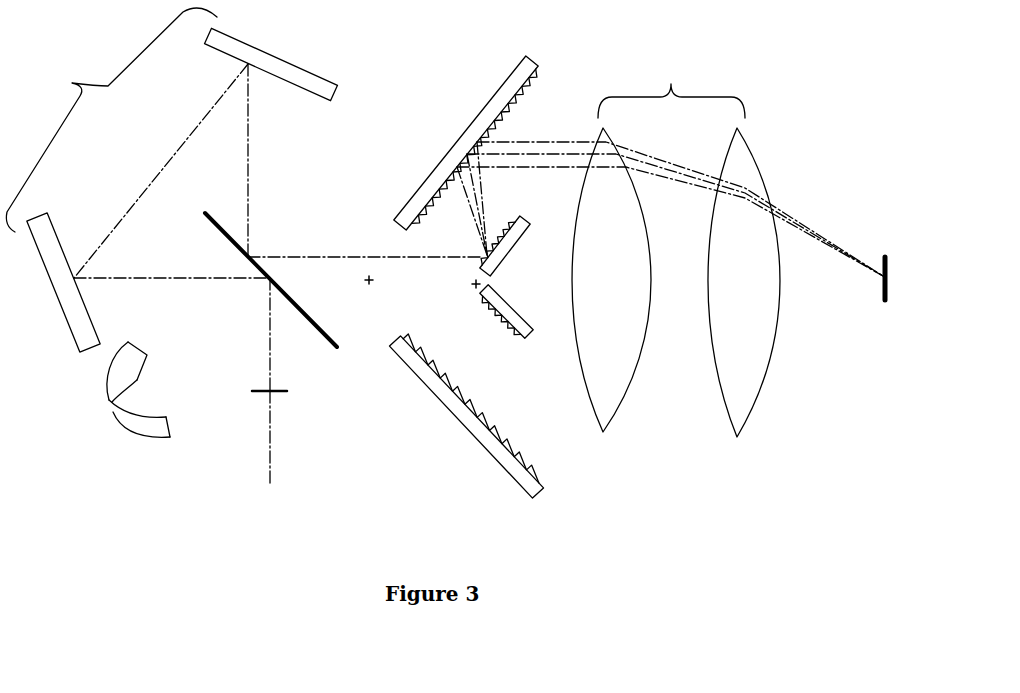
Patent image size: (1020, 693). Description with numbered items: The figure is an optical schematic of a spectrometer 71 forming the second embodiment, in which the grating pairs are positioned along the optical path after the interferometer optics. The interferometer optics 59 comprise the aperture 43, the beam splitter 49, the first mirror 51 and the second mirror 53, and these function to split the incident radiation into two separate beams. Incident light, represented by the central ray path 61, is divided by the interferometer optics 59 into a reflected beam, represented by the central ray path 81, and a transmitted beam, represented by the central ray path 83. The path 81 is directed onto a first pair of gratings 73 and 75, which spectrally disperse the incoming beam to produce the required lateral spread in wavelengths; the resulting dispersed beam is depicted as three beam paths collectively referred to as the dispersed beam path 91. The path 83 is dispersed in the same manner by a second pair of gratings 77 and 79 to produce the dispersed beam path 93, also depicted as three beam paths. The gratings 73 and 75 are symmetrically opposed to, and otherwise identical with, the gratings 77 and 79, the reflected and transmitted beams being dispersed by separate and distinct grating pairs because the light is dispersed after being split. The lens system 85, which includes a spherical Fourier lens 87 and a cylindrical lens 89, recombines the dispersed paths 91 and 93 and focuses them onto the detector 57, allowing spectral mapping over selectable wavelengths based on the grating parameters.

The aperture 43 is at (265, 388).
The beam splitter 49 is at (209, 209).
The first mirror 51 is at (63, 282).
The second mirror 53 is at (271, 64).
The detector 57 is at (885, 255).
The interferometer optics 59 is at (111, 120).
The central ray path 61 is at (266, 457).
The spectrometer 71 is at (153, 390).
The grating 73 is at (524, 241).
The grating 75 is at (452, 140).
The grating 77 is at (455, 425).
The grating 79 is at (521, 306).
The central ray path 81 is at (163, 276).
The central ray path 83 is at (272, 165).
The lens system 85 is at (671, 88).
The spherical lens 87 is at (611, 280).
The cylindrical lens 89 is at (744, 282).
The dispersed beam path 91 is at (557, 165).
The dispersed beam path 93 is at (553, 392).